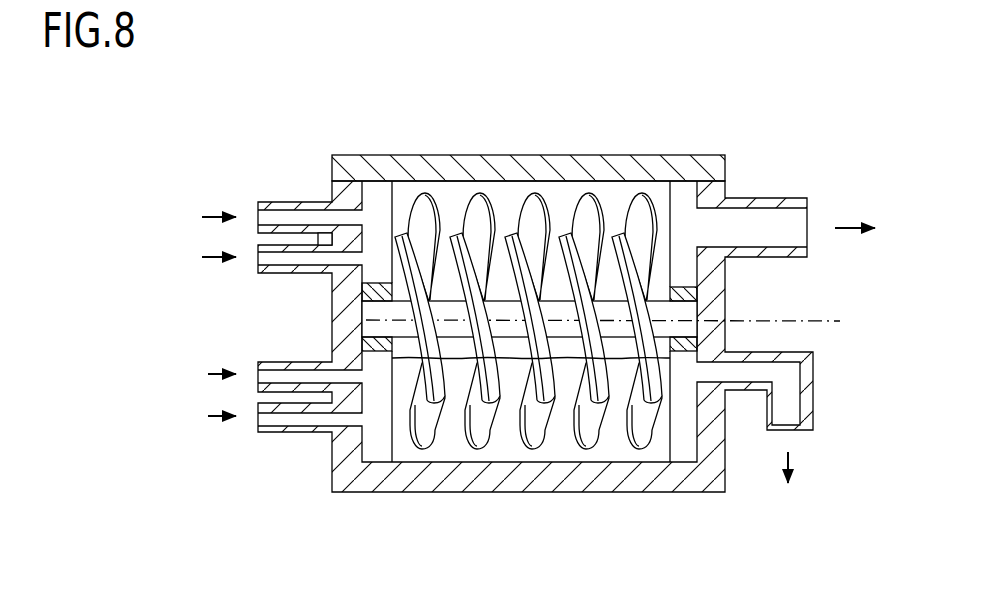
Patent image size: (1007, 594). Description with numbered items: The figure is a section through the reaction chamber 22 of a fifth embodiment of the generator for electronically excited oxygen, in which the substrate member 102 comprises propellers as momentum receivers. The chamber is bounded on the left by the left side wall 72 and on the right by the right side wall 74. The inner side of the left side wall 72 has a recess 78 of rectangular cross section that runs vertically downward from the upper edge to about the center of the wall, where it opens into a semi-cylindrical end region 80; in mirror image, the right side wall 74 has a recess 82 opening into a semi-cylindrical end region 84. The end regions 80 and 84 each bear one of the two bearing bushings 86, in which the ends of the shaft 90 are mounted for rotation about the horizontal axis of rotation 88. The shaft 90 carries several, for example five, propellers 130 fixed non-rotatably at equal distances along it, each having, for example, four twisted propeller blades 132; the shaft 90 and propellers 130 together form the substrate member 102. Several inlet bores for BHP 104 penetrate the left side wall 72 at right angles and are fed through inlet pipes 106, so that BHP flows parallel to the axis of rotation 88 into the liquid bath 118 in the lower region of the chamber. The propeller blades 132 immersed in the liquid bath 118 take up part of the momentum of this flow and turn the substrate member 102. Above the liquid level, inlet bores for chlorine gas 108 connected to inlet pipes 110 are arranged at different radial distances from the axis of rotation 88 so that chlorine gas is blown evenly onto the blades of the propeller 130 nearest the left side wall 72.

The reaction chamber 22 is at (737, 503).
The left side wall 72 is at (337, 297).
The right side wall 74 is at (722, 296).
The recess 78 is at (371, 187).
The semi-cylindrical end region 80 is at (364, 320).
The recess 82 is at (680, 193).
The semi-cylindrical end region 84 is at (676, 347).
The bearing bushings 86 is at (369, 276).
The axis of rotation 88 is at (623, 321).
The shaft 90 is at (570, 334).
The substrate member 102 is at (603, 458).
The inlet bores for BHP 104 is at (372, 383).
The inlet pipes 106 is at (295, 420).
The inlet bores for chlorine gas 108 is at (330, 214).
The inlet pipes 110 is at (270, 253).
The liquid bath 118 is at (502, 438).
The propellers 130 is at (497, 215).
The propeller blades 132 is at (611, 192).